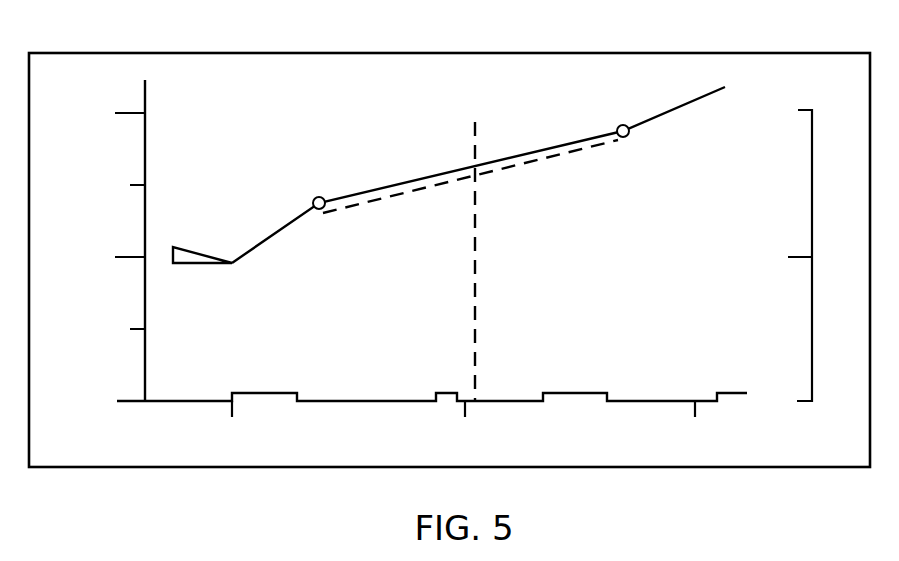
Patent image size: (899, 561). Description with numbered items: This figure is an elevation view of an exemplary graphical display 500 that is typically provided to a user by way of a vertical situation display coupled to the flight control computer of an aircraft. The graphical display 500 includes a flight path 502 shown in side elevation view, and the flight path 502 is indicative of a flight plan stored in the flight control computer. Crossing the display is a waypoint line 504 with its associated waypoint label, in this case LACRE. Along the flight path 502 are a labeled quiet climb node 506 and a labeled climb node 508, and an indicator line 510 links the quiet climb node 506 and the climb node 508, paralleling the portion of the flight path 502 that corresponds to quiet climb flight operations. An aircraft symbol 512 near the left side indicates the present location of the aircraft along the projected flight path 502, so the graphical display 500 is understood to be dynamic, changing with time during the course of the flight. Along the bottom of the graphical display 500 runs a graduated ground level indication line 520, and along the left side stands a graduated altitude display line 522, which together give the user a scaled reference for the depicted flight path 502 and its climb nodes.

The graphical display 500 is at (683, 53).
The flight path 502 is at (675, 113).
The waypoint line 504 is at (476, 240).
The quiet climb node 506 is at (318, 210).
The climb node 508 is at (627, 139).
The indicator line 510 is at (563, 160).
The aircraft symbol 512 is at (193, 263).
The graduated ground level indication line 520 is at (565, 393).
The graduated altitude display line 522 is at (146, 128).